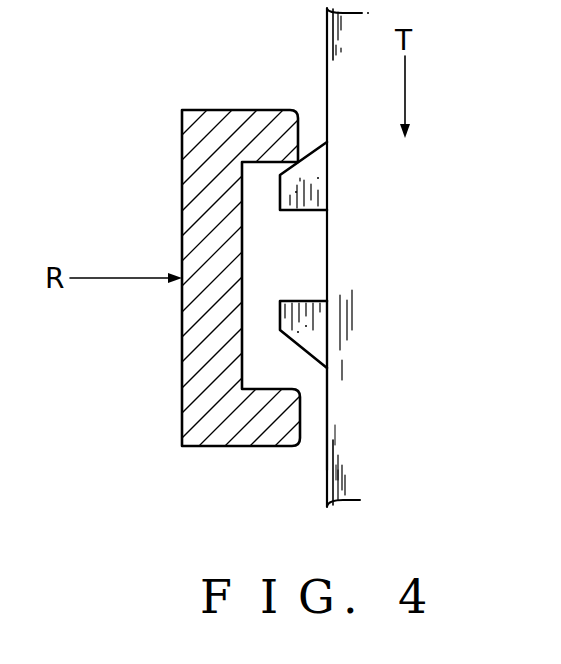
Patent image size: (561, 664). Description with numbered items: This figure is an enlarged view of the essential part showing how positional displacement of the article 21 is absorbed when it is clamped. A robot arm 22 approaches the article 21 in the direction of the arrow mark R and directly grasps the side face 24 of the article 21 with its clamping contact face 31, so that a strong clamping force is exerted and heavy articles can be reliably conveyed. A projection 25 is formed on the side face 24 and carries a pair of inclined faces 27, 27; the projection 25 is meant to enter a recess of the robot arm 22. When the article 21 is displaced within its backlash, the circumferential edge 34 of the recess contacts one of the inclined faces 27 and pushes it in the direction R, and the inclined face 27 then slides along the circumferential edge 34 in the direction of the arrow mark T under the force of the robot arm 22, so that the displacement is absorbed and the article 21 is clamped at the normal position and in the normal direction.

The article 21 is at (318, 43).
The robot arm 22 is at (193, 400).
The side face 24 is at (327, 478).
The projection 25 is at (275, 260).
The inclined face 27 is at (318, 149).
The clamping contact face 31 is at (302, 421).
The circumferential edge 34 is at (300, 164).